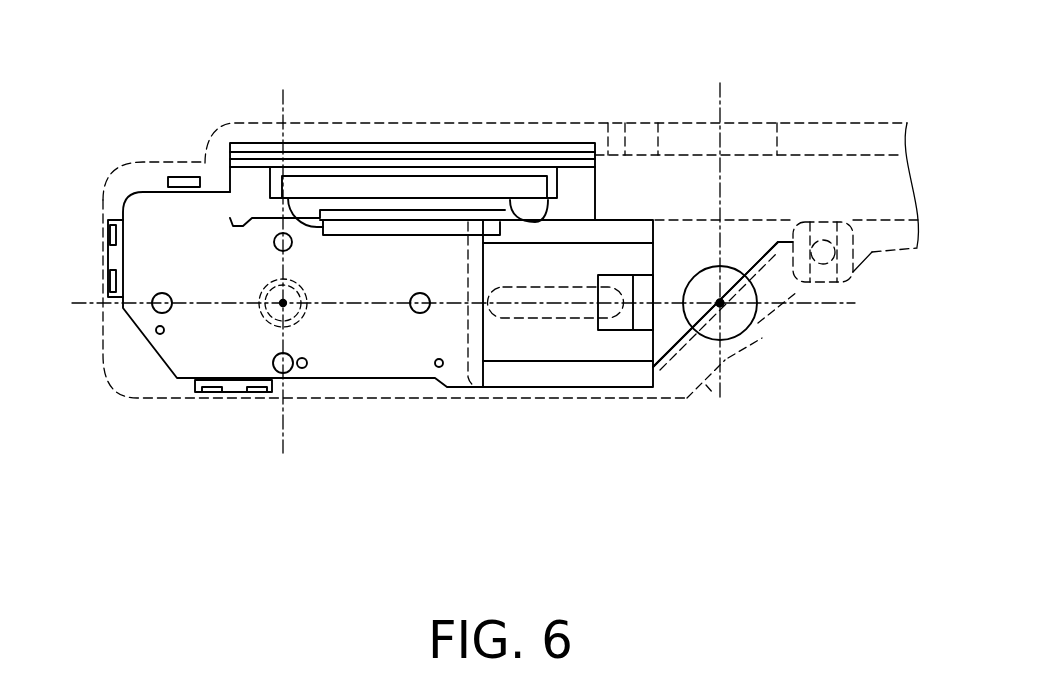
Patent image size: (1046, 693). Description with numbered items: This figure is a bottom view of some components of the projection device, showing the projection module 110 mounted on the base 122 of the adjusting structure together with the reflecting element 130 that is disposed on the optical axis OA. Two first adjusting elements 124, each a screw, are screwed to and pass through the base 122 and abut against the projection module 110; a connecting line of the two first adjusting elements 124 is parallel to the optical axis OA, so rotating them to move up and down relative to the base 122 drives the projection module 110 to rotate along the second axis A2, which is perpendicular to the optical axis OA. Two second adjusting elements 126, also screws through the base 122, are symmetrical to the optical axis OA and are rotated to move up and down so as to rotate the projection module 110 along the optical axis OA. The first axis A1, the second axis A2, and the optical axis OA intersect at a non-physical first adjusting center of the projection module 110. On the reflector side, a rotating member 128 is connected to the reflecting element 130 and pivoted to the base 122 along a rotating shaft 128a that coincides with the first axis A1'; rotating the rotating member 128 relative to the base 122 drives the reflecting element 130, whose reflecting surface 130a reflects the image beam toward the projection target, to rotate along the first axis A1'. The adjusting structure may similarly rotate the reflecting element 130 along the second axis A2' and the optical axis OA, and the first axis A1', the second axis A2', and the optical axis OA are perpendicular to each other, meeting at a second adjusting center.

The projection module 110 is at (442, 255).
The base 122 is at (709, 403).
The first adjusting elements 124 is at (412, 312).
The second adjusting elements 126 is at (292, 244).
The rotating member 128 is at (750, 321).
The rotating shaft 128a is at (722, 306).
The reflecting element 130 is at (678, 257).
The reflecting surface 130a is at (675, 352).
The optical axis OA is at (88, 312).
The first axis A1 is at (247, 191).
The second axis A2 is at (255, 306).
The first axis A1' is at (784, 181).
The second axis A2' is at (751, 220).